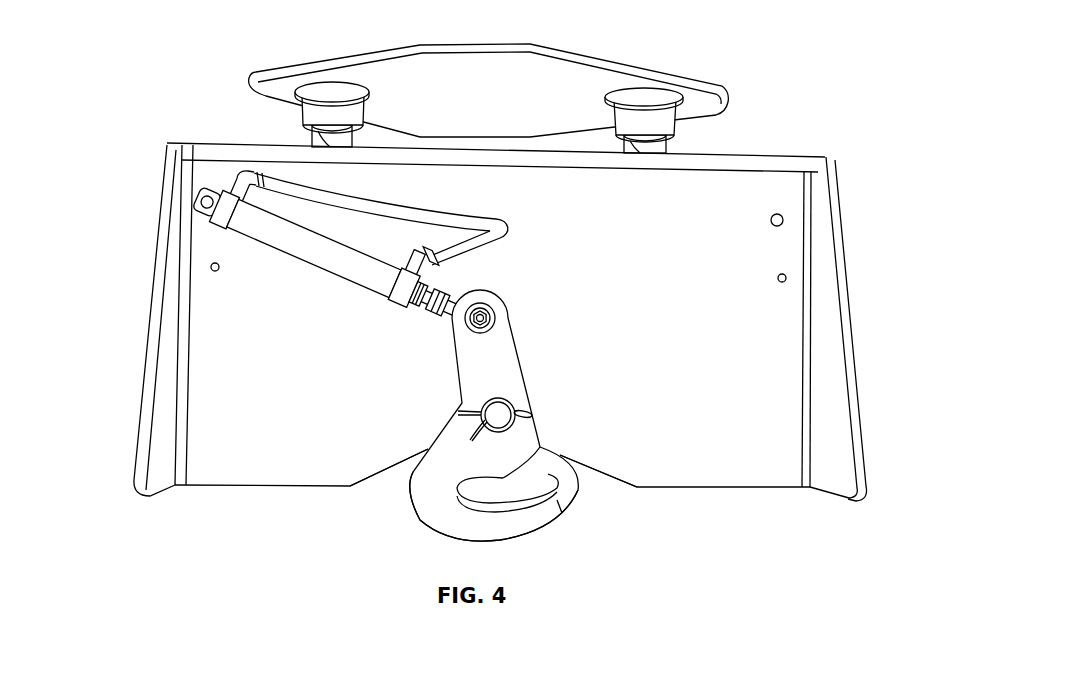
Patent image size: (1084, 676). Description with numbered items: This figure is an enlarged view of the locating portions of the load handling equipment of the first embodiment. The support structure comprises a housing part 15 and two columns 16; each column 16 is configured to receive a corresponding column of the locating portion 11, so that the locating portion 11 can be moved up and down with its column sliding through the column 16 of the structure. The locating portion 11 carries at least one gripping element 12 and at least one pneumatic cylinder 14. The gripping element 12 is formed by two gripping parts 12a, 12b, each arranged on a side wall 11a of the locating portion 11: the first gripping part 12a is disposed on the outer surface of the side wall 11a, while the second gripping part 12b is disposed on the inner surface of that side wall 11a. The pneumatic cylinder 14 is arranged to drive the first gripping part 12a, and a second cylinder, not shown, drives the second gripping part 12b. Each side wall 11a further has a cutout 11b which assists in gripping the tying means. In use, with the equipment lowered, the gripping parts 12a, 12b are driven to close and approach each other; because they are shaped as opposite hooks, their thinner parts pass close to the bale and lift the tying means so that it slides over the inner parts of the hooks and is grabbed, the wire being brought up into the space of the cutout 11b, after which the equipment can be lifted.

The housing part 15 is at (705, 92).
The column 16 is at (657, 117).
The locating portion 11 is at (536, 355).
The side wall 11a is at (750, 303).
The cutout 11b is at (593, 465).
The pneumatic cylinder 14 is at (290, 245).
The gripping element 12 is at (442, 430).
The first gripping part 12a is at (427, 505).
The second gripping part 12b is at (553, 477).